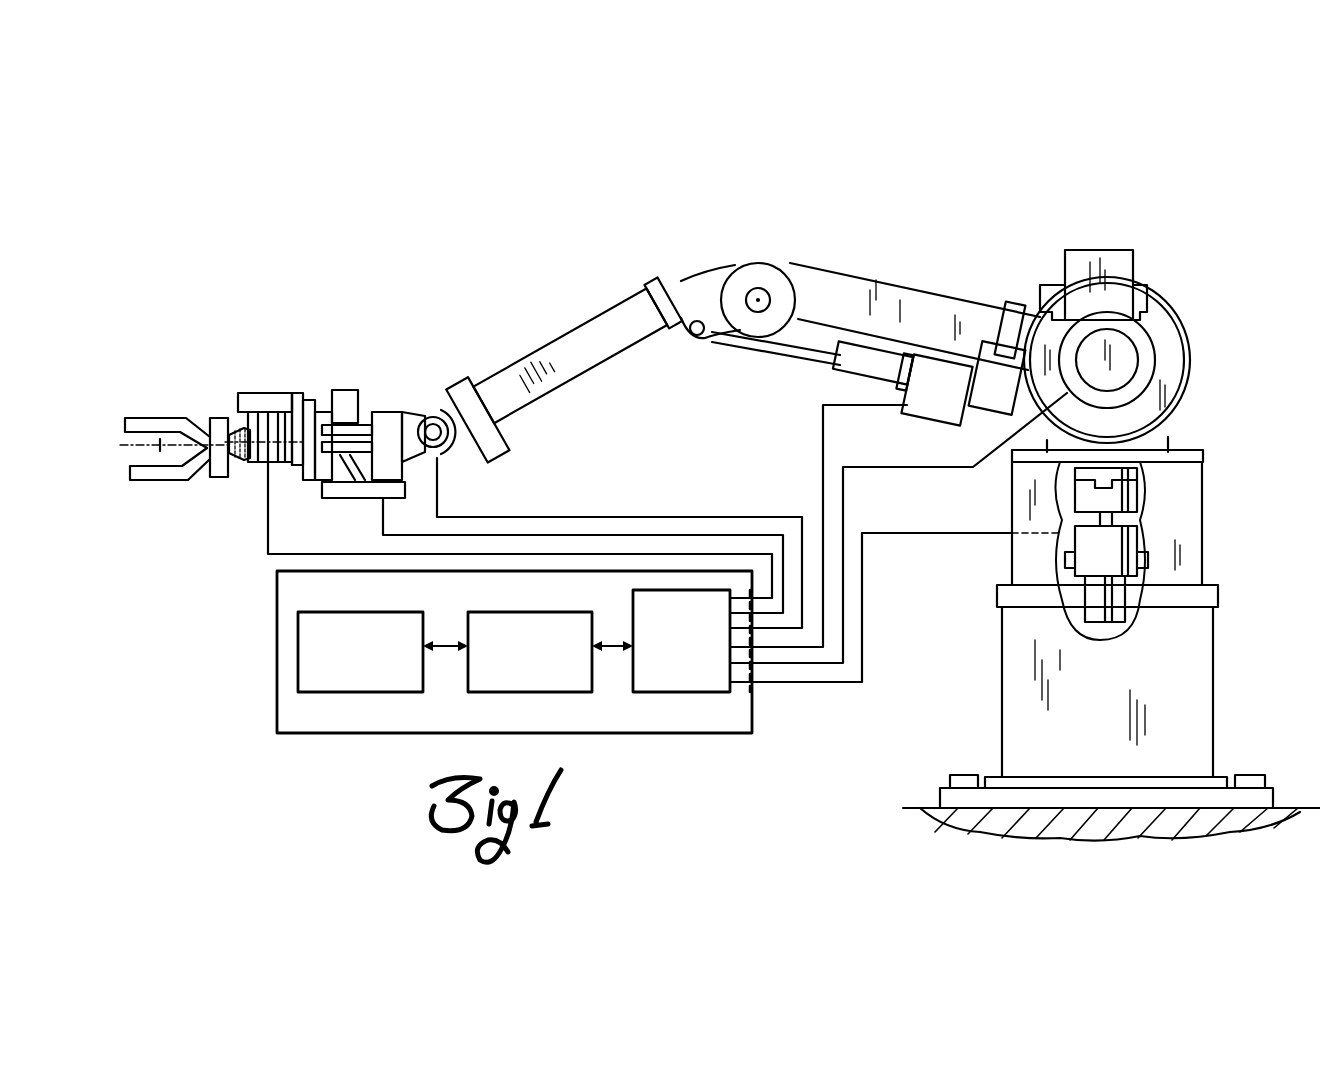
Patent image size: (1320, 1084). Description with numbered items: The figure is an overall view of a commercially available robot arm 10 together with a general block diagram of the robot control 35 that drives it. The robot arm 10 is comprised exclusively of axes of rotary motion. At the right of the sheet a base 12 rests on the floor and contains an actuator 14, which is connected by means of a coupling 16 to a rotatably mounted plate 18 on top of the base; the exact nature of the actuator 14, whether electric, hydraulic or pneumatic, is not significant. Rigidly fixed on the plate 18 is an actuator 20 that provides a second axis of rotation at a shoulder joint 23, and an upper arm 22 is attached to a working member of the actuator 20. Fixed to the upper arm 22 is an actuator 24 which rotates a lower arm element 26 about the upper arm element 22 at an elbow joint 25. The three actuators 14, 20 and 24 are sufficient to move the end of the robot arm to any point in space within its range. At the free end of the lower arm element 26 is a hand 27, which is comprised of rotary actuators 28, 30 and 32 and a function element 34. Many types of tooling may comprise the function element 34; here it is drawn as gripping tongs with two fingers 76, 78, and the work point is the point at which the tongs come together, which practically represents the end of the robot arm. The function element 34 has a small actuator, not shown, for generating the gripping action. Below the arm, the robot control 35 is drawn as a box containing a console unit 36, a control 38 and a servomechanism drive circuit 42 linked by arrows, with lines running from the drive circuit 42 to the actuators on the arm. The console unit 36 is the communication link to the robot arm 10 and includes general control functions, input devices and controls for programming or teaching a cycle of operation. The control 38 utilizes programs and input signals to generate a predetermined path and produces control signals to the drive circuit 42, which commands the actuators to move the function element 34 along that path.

The robot arm 10 is at (853, 248).
The base 12 is at (1214, 664).
The actuator 14 is at (1139, 536).
The coupling 16 is at (1140, 494).
The rotatably mounted plate 18 is at (1183, 455).
The actuator 20 is at (1188, 352).
The upper arm 22 is at (882, 287).
The shoulder joint 23 is at (1162, 278).
The actuator 24 is at (938, 428).
The elbow joint 25 is at (752, 258).
The lower arm element 26 is at (593, 376).
The hand 27 is at (262, 372).
The rotary actuator 28 is at (447, 460).
The rotary actuator 30 is at (345, 410).
The rotary actuator 32 is at (248, 463).
The function element 34 is at (154, 494).
The robot control 35 is at (570, 602).
The console unit 36 is at (400, 694).
The control 38 is at (566, 694).
The servomechanism drive circuit 42 is at (712, 694).
The point 76 is at (162, 443).
The gripper finger 78 is at (148, 447).